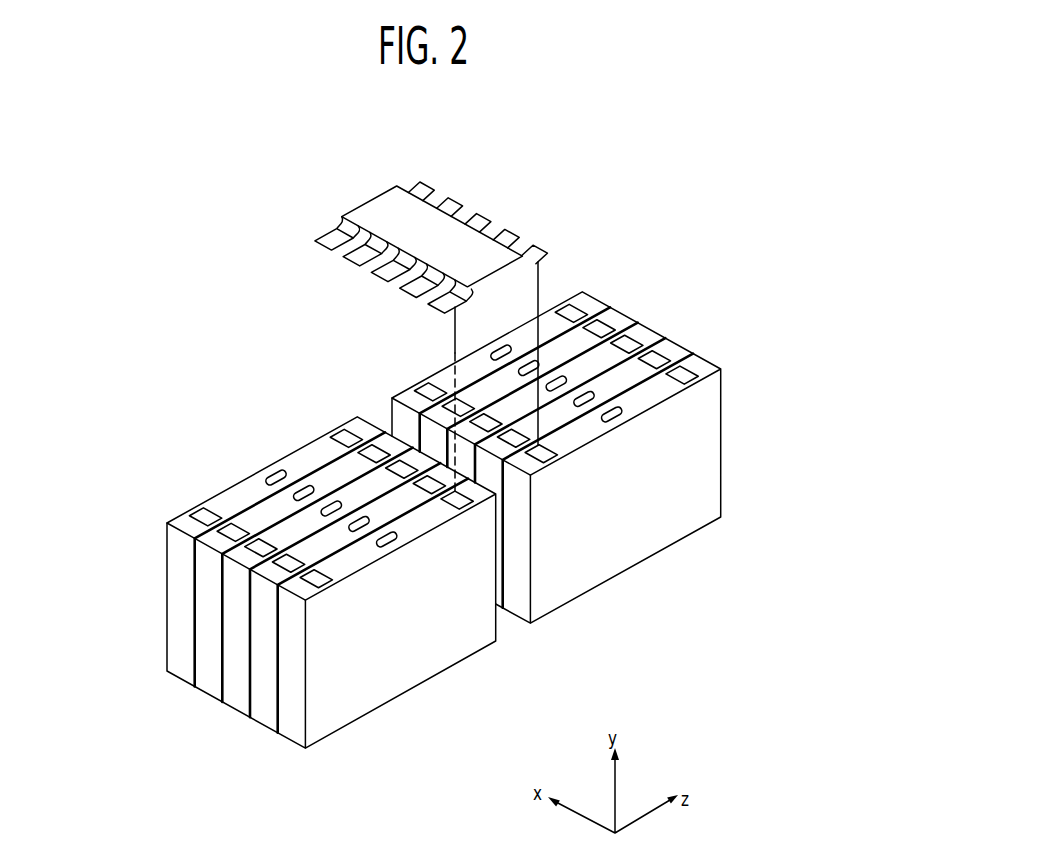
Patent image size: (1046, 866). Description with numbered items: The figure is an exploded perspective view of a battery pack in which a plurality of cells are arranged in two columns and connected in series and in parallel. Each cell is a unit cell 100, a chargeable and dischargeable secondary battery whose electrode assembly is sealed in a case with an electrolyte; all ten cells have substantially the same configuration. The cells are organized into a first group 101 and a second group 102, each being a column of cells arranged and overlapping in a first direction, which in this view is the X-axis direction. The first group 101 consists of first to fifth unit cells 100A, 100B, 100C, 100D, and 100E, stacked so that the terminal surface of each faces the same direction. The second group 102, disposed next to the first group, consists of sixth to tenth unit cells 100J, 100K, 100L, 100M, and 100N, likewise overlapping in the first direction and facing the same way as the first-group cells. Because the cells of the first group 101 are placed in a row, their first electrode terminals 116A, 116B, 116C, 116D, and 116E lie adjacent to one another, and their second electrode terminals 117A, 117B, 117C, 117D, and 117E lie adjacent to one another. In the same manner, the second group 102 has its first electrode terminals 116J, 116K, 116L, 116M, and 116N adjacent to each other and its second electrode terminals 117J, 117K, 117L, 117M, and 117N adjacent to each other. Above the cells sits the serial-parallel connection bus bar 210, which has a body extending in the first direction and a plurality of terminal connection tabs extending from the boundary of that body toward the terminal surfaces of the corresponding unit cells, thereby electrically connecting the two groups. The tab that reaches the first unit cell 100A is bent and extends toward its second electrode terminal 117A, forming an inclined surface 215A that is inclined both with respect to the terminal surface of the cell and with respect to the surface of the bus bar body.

The unit cell 100 is at (288, 573).
The first unit cell 100A is at (232, 568).
The second unit cell 100B is at (246, 564).
The third unit cell 100C is at (260, 558).
The fourth unit cell 100D is at (274, 555).
The fifth unit cell 100E is at (276, 571).
The sixth unit cell 100J is at (573, 373).
The seventh unit cell 100K is at (595, 424).
The eighth unit cell 100L is at (621, 451).
The ninth unit cell 100M is at (645, 476).
The tenth unit cell 100N is at (659, 499).
The first group of cells 101 is at (288, 573).
The second group of cells 102 is at (604, 425).
The first electrode terminal 116A is at (196, 511).
The first electrode terminal 116B is at (222, 539).
The first electrode terminal 116C is at (249, 554).
The first electrode terminal 116D is at (276, 568).
The first electrode terminal 116E is at (305, 583).
The first electrode terminal 116J is at (445, 395).
The first electrode terminal 116K is at (470, 410).
The first electrode terminal 116L is at (497, 428).
The first electrode terminal 116M is at (523, 445).
The first electrode terminal 116N is at (544, 462).
The second electrode terminal 117A is at (332, 438).
The second electrode terminal 117B is at (372, 446).
The second electrode terminal 117C is at (400, 461).
The second electrode terminal 117D is at (428, 476).
The second electrode terminal 117E is at (456, 492).
The second electrode terminal 117J is at (571, 304).
The second electrode terminal 117K is at (614, 331).
The second electrode terminal 117L is at (642, 346).
The second electrode terminal 117M is at (670, 361).
The second electrode terminal 117N is at (697, 377).
The serial-parallel connection bus bar 210 is at (411, 302).
The inclined surface 215A is at (341, 226).